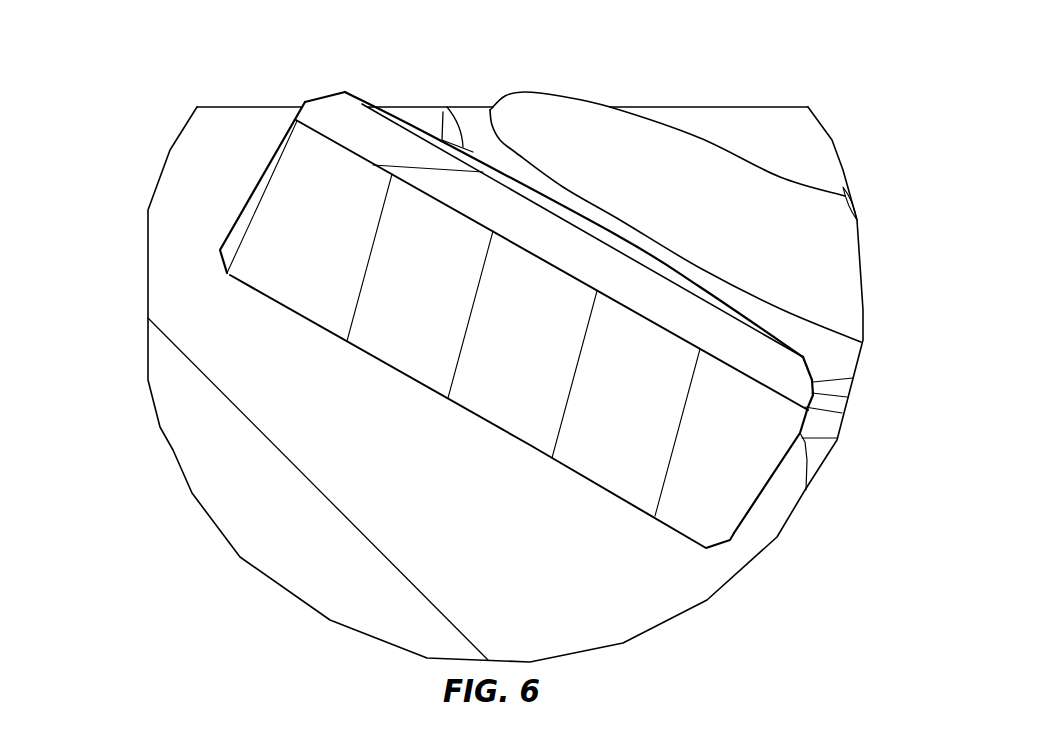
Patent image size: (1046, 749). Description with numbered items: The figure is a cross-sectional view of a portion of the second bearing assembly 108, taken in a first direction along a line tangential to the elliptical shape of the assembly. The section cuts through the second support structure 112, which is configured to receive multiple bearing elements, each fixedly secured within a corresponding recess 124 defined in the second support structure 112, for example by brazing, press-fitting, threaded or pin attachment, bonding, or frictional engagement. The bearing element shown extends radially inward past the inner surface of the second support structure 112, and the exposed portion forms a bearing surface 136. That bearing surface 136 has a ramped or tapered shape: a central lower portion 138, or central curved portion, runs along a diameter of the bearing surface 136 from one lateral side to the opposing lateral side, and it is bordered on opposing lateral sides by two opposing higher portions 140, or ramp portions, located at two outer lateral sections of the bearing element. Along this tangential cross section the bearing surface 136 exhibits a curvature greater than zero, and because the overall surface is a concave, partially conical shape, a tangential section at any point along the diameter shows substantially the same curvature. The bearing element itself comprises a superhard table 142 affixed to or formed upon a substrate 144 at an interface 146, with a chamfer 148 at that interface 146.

The second bearing assembly 108 is at (199, 72).
The second support structure 112 is at (252, 527).
The recess 124 is at (300, 315).
The bearing surface 136 is at (528, 112).
The central lower portion 138 is at (758, 225).
The higher portions 140 is at (788, 197).
The superhard table 142 is at (385, 152).
The substrate 144 is at (278, 253).
The interface 146 is at (590, 290).
The chamfer 148 is at (812, 371).